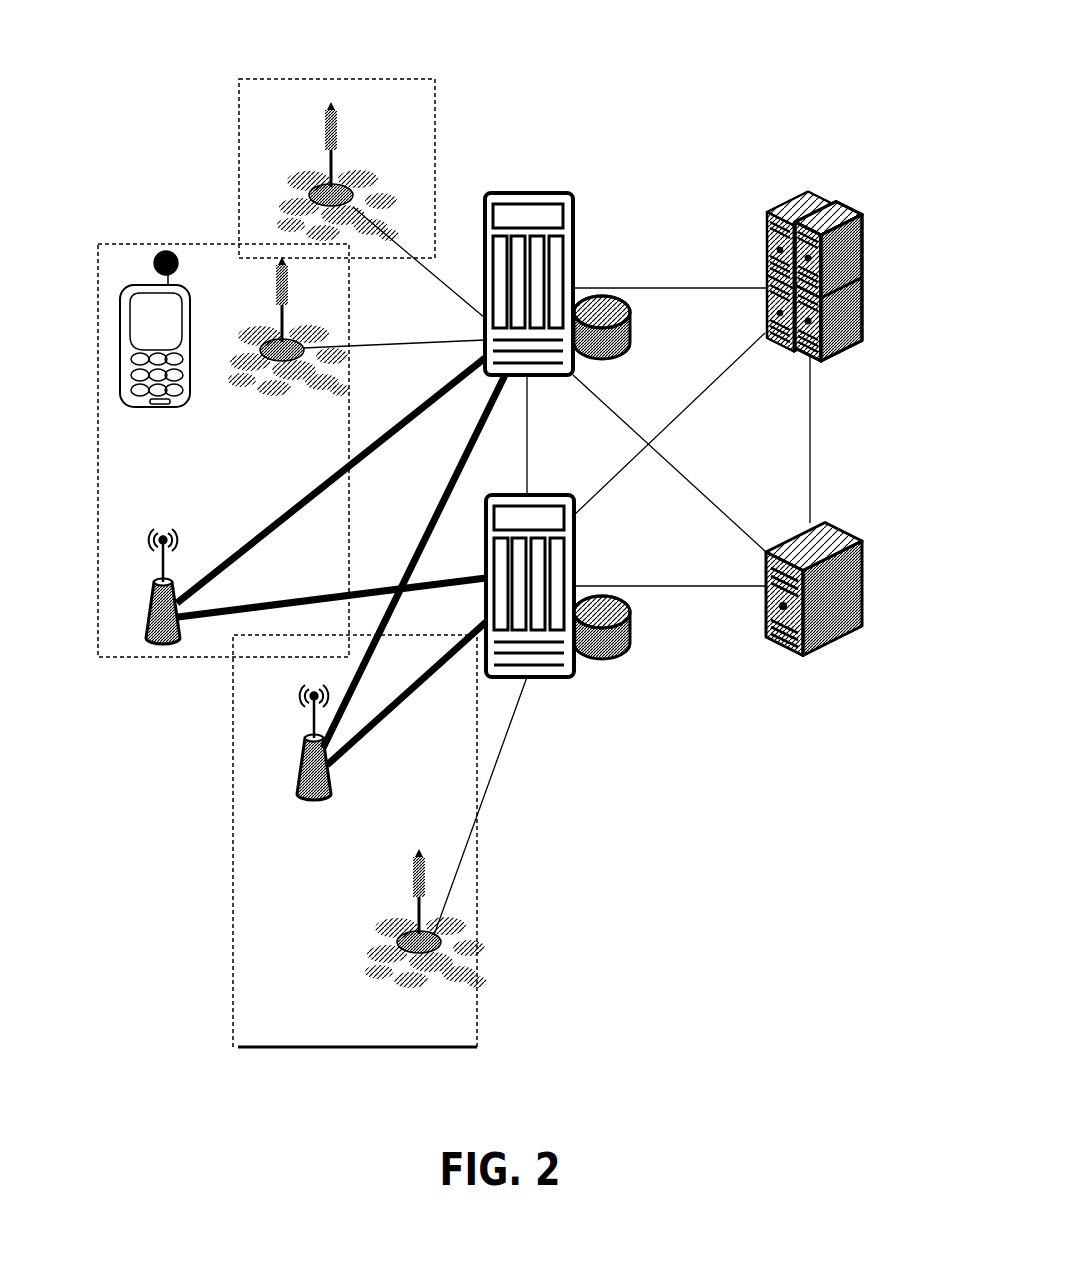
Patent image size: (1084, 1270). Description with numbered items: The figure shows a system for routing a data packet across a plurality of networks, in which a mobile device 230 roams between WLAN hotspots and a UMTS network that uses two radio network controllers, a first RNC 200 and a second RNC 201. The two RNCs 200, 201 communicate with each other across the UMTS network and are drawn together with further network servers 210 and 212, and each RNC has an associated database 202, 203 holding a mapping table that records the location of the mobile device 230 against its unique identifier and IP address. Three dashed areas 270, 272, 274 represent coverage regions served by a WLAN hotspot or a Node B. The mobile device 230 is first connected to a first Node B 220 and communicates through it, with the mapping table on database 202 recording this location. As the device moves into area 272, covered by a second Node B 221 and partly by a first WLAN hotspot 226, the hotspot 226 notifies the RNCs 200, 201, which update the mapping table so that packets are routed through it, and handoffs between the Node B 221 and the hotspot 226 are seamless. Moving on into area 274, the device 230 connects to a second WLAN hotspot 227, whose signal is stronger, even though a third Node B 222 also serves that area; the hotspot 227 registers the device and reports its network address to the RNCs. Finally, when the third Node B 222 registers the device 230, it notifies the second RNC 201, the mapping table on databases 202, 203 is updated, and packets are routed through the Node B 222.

The first RNC 200 is at (543, 200).
The second RNC 201 is at (570, 545).
The database 202 is at (608, 305).
The database 203 is at (595, 658).
The server bank 210 is at (810, 193).
The server 212 is at (780, 647).
The first Node B 220 is at (333, 172).
The second Node B 221 is at (285, 365).
The third Node B 222 is at (437, 957).
The first WLAN hotspot 226 is at (168, 572).
The second WLAN hotspot 227 is at (295, 788).
The mobile device 230 is at (172, 251).
The area 270 is at (275, 79).
The area 272 is at (190, 657).
The area 274 is at (277, 1047).